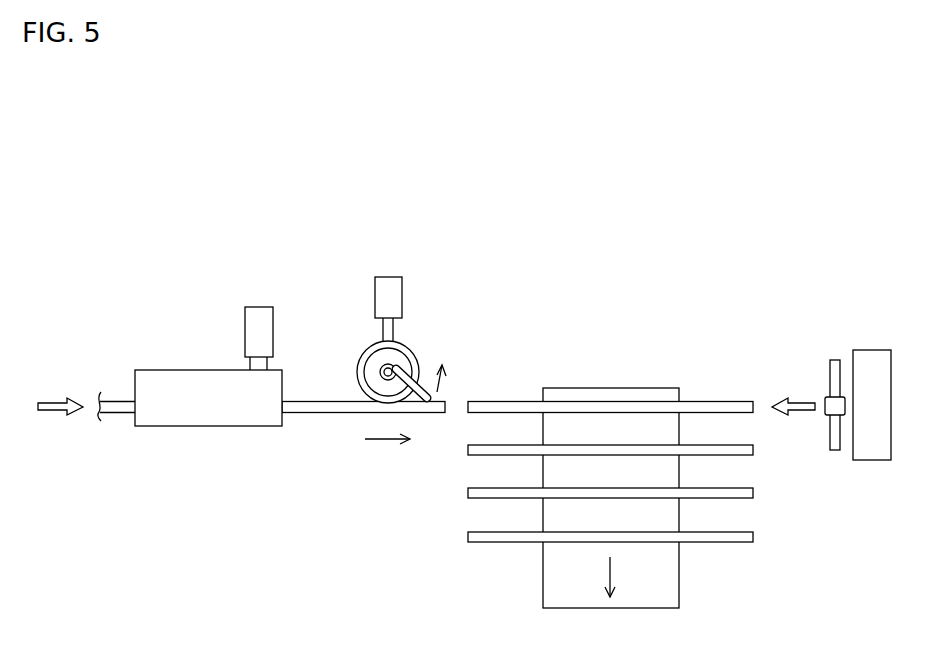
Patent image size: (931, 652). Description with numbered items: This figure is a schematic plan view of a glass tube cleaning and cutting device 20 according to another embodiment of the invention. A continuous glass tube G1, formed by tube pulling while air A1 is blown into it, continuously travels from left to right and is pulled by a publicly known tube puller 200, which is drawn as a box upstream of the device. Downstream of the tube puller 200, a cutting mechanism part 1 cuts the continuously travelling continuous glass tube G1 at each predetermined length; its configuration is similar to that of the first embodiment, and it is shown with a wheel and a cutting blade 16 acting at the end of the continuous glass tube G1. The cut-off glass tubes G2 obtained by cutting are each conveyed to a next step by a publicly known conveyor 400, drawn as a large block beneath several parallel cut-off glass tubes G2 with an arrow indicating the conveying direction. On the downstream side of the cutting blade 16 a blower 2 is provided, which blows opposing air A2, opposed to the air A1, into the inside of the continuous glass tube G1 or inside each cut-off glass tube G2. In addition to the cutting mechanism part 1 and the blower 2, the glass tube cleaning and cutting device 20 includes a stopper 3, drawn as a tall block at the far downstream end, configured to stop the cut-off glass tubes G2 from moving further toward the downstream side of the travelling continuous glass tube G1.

The cutting mechanism part 1 is at (417, 328).
The blower 2 is at (832, 342).
The stopper 3 is at (901, 428).
The cutting blade 16 is at (433, 403).
The glass tube cleaning and cutting device 20 is at (415, 217).
The tube puller 200 is at (193, 367).
The conveyor 400 is at (679, 573).
The air A1 is at (60, 392).
The opposing air A2 is at (793, 392).
The continuous glass tube G1 is at (323, 413).
The cut-off glass tube G2 is at (727, 400).